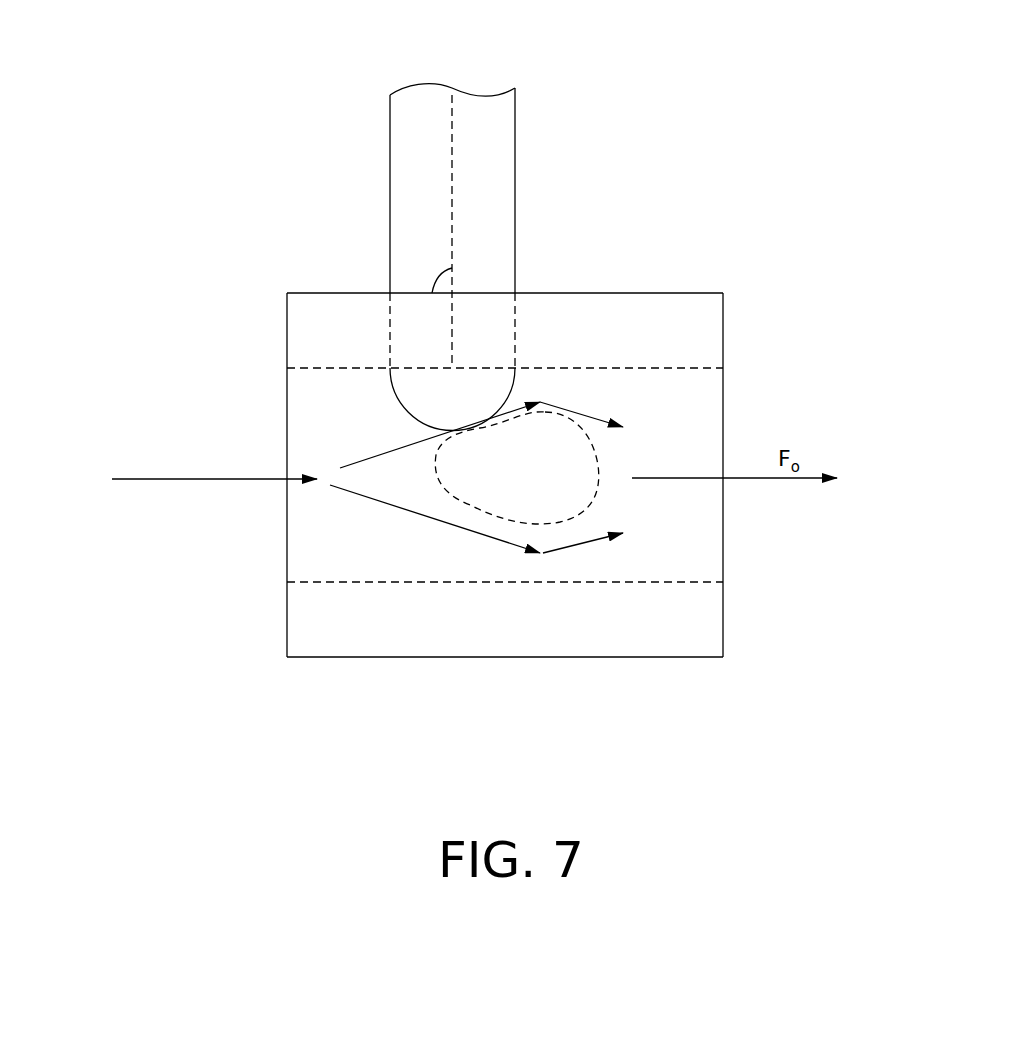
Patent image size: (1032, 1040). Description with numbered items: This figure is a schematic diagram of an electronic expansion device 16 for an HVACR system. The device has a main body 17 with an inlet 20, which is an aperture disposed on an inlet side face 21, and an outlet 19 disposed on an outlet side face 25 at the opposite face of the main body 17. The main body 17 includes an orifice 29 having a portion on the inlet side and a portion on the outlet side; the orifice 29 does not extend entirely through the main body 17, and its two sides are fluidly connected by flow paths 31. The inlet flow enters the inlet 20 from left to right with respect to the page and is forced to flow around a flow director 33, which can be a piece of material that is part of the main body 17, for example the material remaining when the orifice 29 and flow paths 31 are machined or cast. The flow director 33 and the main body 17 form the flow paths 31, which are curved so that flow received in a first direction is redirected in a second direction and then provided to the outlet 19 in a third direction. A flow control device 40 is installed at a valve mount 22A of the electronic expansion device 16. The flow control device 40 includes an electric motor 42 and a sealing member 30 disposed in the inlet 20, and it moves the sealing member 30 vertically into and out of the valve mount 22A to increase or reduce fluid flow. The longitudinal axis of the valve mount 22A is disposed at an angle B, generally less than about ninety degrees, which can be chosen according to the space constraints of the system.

The electronic expansion device 16 is at (800, 63).
The main body 17 is at (306, 657).
The outlet 19 is at (692, 402).
The inlet 20 is at (288, 528).
The inlet side face 21 is at (288, 323).
The valve mount 22A is at (515, 330).
The outlet side face 25 is at (723, 323).
The orifice 29 is at (692, 537).
The sealing member 30 is at (420, 413).
The flow path 31 is at (548, 392).
The flow director 33 is at (575, 470).
The flow control device 40 is at (515, 125).
The electric motor 42 is at (390, 175).